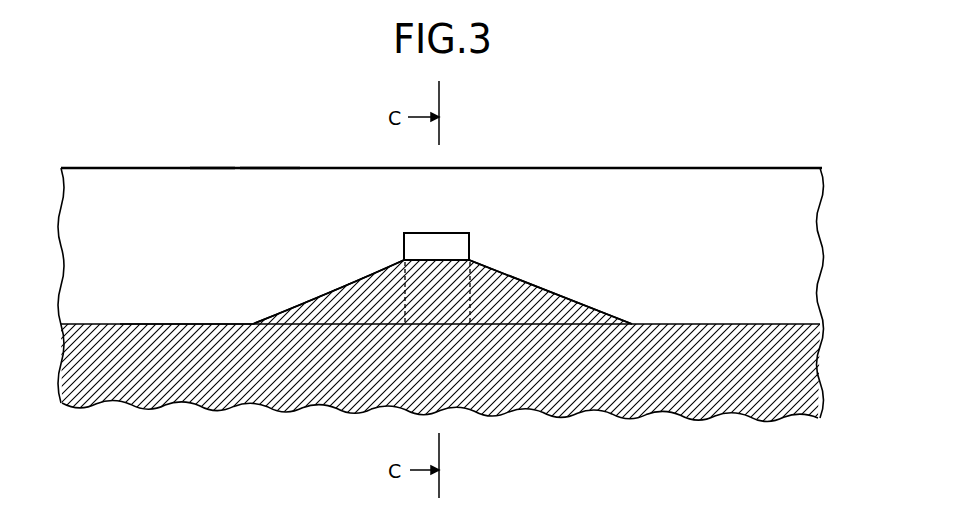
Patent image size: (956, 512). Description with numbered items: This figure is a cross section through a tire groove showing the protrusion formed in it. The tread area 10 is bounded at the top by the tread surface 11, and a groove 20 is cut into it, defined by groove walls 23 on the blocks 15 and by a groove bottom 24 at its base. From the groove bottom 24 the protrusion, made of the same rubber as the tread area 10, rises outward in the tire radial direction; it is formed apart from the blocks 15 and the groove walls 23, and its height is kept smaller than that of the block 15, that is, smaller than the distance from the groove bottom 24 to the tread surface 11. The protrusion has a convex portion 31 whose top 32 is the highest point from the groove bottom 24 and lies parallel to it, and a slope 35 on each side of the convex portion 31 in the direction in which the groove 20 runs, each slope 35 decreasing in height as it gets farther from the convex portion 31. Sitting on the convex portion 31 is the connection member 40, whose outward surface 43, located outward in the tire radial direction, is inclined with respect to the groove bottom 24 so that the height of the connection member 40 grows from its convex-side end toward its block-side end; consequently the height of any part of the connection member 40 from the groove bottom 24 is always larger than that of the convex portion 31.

The tread area 10 is at (253, 416).
The tread surface 11 is at (256, 168).
The block 15 is at (553, 190).
The groove 20 is at (168, 222).
The groove wall 23 is at (205, 182).
The groove bottom 24 is at (190, 323).
The convex portion 31 is at (465, 284).
The top 32 is at (405, 257).
The slope 35 is at (368, 291).
The connection member 40 is at (470, 238).
The outward surface 43 is at (445, 240).